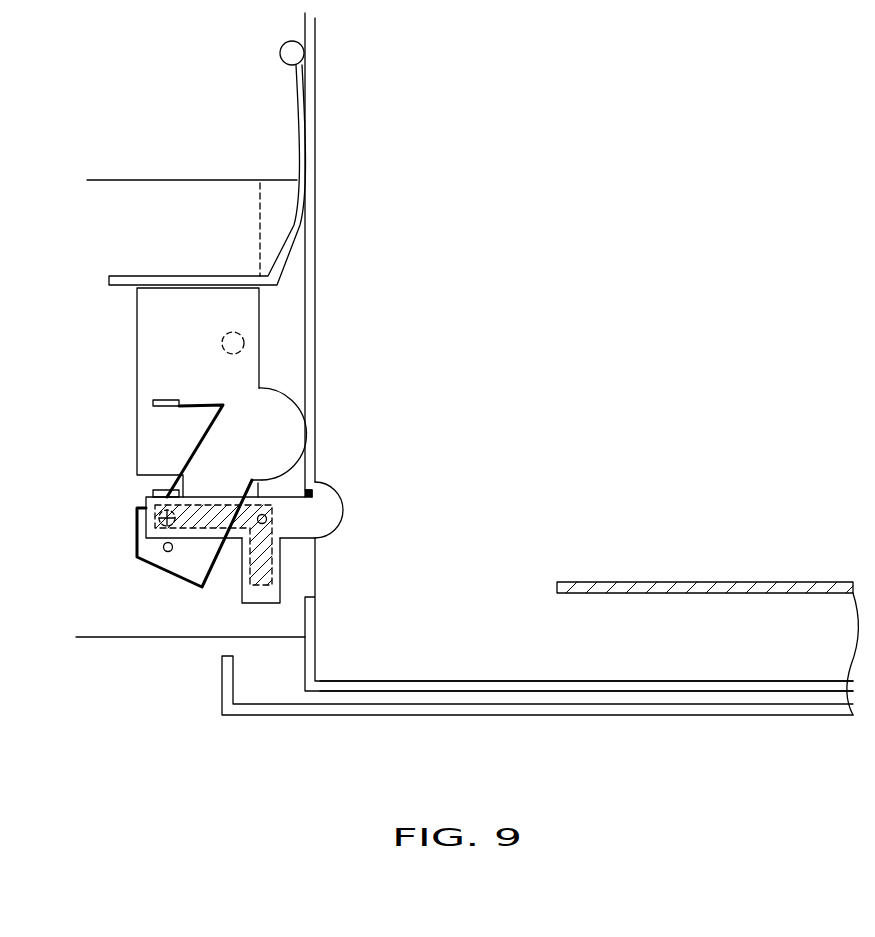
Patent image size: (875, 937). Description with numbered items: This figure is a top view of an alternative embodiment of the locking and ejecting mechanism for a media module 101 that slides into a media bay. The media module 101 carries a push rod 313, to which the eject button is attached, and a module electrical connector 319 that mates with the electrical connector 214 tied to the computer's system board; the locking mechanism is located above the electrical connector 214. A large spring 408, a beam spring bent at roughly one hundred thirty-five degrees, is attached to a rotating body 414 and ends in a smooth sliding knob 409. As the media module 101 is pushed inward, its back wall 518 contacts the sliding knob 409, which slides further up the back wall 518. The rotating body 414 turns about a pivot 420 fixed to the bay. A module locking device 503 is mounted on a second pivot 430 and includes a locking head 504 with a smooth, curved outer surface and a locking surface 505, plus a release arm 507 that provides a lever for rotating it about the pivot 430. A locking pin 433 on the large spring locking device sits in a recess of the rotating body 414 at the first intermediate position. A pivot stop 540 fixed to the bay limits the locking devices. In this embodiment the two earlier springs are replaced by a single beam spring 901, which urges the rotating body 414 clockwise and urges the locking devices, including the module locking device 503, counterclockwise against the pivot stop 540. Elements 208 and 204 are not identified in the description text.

The media module 101 is at (531, 336).
The sliding knob 409 is at (281, 53).
The large spring 408 is at (298, 117).
The electrical connector 214 is at (191, 197).
The module electrical connector 319 is at (273, 192).
The rotating body 414 is at (170, 373).
The back wall 518 is at (316, 422).
The pivot 420 is at (244, 343).
The beam spring 901 is at (197, 440).
The pivot 430 is at (248, 503).
The locking surface 505 is at (315, 482).
The locking head 504 is at (343, 508).
The module locking device 503 is at (316, 524).
The release arm 507 is at (233, 587).
The locking pin 433 is at (156, 518).
The pivot stop 540 is at (164, 550).
The push rod 313 is at (735, 582).
The bottom plate 208 is at (757, 681).
The tray 204 is at (770, 717).